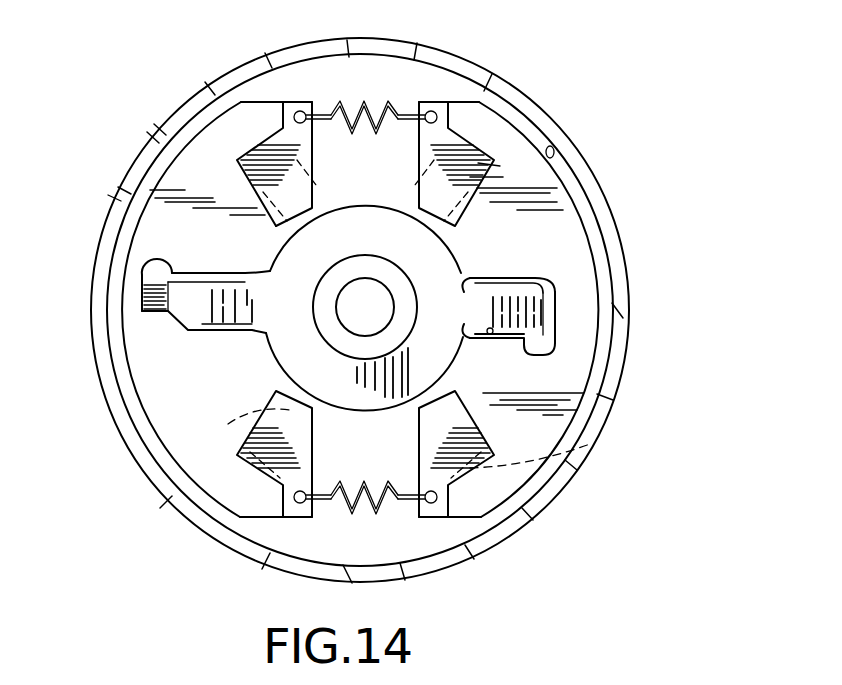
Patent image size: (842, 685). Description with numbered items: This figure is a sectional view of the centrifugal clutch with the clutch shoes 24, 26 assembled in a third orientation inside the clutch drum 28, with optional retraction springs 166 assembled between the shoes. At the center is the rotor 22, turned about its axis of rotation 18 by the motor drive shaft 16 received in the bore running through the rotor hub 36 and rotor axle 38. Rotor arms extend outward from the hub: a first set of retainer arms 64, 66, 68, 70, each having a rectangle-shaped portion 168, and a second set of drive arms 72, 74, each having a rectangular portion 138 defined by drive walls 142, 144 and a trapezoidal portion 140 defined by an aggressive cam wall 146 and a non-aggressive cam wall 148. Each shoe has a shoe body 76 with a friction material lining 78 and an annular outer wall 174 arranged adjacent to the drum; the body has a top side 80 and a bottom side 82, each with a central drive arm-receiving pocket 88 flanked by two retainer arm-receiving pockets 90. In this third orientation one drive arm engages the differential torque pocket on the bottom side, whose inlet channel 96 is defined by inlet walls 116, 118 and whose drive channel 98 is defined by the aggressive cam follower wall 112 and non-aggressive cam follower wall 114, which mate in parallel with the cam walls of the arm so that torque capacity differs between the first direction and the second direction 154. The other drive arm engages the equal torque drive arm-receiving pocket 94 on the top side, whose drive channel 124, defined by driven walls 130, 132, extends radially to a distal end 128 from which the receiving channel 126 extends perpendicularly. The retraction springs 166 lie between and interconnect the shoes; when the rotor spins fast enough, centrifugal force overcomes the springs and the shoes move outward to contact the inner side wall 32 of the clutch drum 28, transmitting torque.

The motor drive shaft 16 is at (362, 294).
The axis of rotation 18 is at (366, 313).
The rotor 22 is at (383, 200).
The clutch shoe 24 is at (568, 237).
The clutch shoe 26 is at (210, 457).
The clutch drum 28 is at (497, 88).
The inner side wall 32 is at (556, 151).
The rotor hub 36 is at (362, 398).
The rotor axle 38 is at (378, 272).
The retainer arm 64 is at (313, 196).
The retainer arm 66 is at (249, 398).
The retainer arm 68 is at (558, 453).
The retainer arm 70 is at (505, 167).
The drive arm 72 is at (194, 346).
The drive arm 74 is at (543, 322).
The shoe body 76 is at (225, 487).
The friction material lining 78 is at (197, 493).
The top side 80 is at (553, 193).
The bottom side 82 is at (188, 166).
The drive arm-receiving pocket 88 is at (150, 286).
The retainer arm-receiving pocket 90 is at (265, 142).
The equal torque drive arm-receiving pocket 94 is at (556, 295).
The inlet channel 96 is at (204, 341).
The drive channel 98 is at (150, 262).
The aggressive cam follower wall 112 is at (160, 312).
The non-aggressive cam follower wall 114 is at (150, 303).
The inlet wall 116 is at (252, 320).
The inlet wall 118 is at (268, 283).
The drive channel 124 is at (500, 272).
The receiving channel 126 is at (556, 305).
The distal end 128 is at (549, 281).
The driven wall 130 is at (460, 288).
The driven wall 132 is at (490, 334).
The rectangular portion 138 is at (427, 329).
The trapezoidal portion 140 is at (556, 342).
The drive wall 142 is at (203, 356).
The drive wall 144 is at (197, 270).
The aggressive cam wall 146 is at (150, 348).
The non-aggressive cam wall 148 is at (148, 262).
The second direction 154 is at (290, 333).
The retraction springs 166 is at (384, 104).
The rectangle-shaped portion 168 is at (207, 187).
The annular outer wall 174 is at (188, 163).